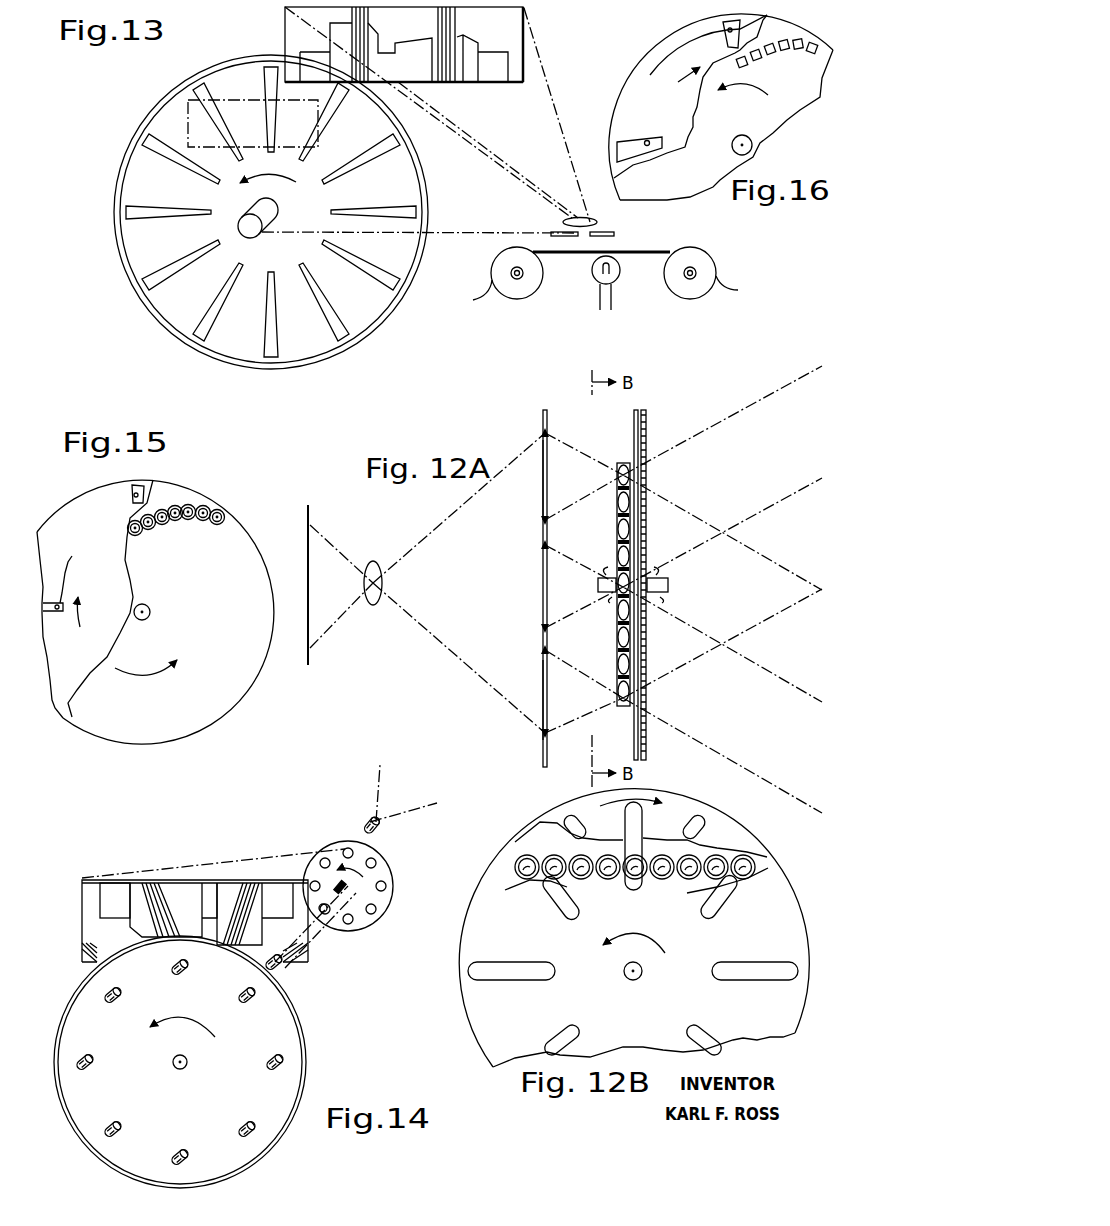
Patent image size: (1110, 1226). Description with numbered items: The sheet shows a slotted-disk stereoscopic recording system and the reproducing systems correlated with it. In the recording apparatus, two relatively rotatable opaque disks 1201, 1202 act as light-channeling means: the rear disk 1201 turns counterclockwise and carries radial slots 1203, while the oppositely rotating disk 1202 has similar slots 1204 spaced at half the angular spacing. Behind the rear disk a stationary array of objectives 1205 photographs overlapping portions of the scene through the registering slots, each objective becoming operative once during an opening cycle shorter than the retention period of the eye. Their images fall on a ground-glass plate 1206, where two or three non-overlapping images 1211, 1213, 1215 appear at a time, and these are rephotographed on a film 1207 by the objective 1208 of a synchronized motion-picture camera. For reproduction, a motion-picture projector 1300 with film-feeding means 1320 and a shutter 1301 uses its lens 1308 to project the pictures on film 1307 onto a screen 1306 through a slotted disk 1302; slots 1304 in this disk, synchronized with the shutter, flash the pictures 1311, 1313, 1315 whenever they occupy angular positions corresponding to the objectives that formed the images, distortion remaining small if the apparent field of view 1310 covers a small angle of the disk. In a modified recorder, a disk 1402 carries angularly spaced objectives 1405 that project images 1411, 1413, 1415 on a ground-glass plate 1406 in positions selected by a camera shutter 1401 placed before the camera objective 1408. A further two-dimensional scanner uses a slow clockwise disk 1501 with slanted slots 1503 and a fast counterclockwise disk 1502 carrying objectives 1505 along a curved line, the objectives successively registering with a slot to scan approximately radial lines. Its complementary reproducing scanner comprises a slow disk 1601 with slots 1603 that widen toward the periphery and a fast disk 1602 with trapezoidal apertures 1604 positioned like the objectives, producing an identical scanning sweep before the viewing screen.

In FIG. 12A, the slotted disk 1201 is at (633, 418).
In FIG. 12B, the slotted disk 1201 is at (765, 880).
In FIG. 12A, the slotted disk 1202 is at (647, 422).
In FIG. 12B, the slotted disk 1202 is at (727, 834).
In FIG. 12B, the radial slots 1203 is at (687, 893).
In FIG. 12B, the slots 1204 is at (648, 824).
In FIG. 12A, the objectives 1205 is at (617, 640).
In FIG. 12B, the objectives 1205 is at (572, 845).
In FIG. 12A, the ground-glass plate 1206 is at (545, 533).
In FIG. 12A, the film 1207 is at (340, 585).
In FIG. 12A, the objective 1208 is at (378, 568).
In FIG. 12A, the image 1211 is at (547, 478).
In FIG. 12A, the image 1213 is at (547, 590).
In FIG. 12A, the image 1215 is at (545, 700).
In FIG. 13, the motion-picture projector 1300 is at (568, 284).
In FIG. 13, the shutter 1301 is at (614, 235).
In FIG. 13, the disk 1302 is at (163, 308).
In FIG. 13, the slots 1304 is at (268, 343).
In FIG. 13, the screen 1306 is at (527, 55).
In FIG. 13, the film 1307 is at (647, 254).
In FIG. 13, the lens 1308 is at (565, 221).
In FIG. 13, the apparent field of view 1310 is at (190, 115).
In FIG. 13, the picture 1311 is at (296, 24).
In FIG. 13, the picture 1313 is at (420, 75).
In FIG. 13, the picture 1315 is at (517, 84).
In FIG. 13, the film-feeding means 1320 is at (512, 288).
In FIG. 14, the camera shutter 1401 is at (383, 872).
In FIG. 14, the disk 1402 is at (292, 1027).
In FIG. 14, the objectives 1405 is at (242, 1125).
In FIG. 14, the ground-glass plate 1406 is at (79, 886).
In FIG. 14, the camera objective 1408 is at (363, 823).
In FIG. 14, the image 1411 is at (278, 893).
In FIG. 14, the image 1413 is at (178, 898).
In FIG. 14, the image 1415 is at (88, 912).
In FIG. 15, the disk 1501 is at (130, 477).
In FIG. 15, the disk 1502 is at (175, 728).
In FIG. 15, the slots 1503 is at (133, 503).
In FIG. 15, the objectives 1505 is at (203, 521).
In FIG. 16, the disk 1601 is at (655, 52).
In FIG. 16, the disk 1602 is at (698, 183).
In FIG. 16, the slots 1603 is at (650, 137).
In FIG. 16, the trapezoidal apertures 1604 is at (805, 57).